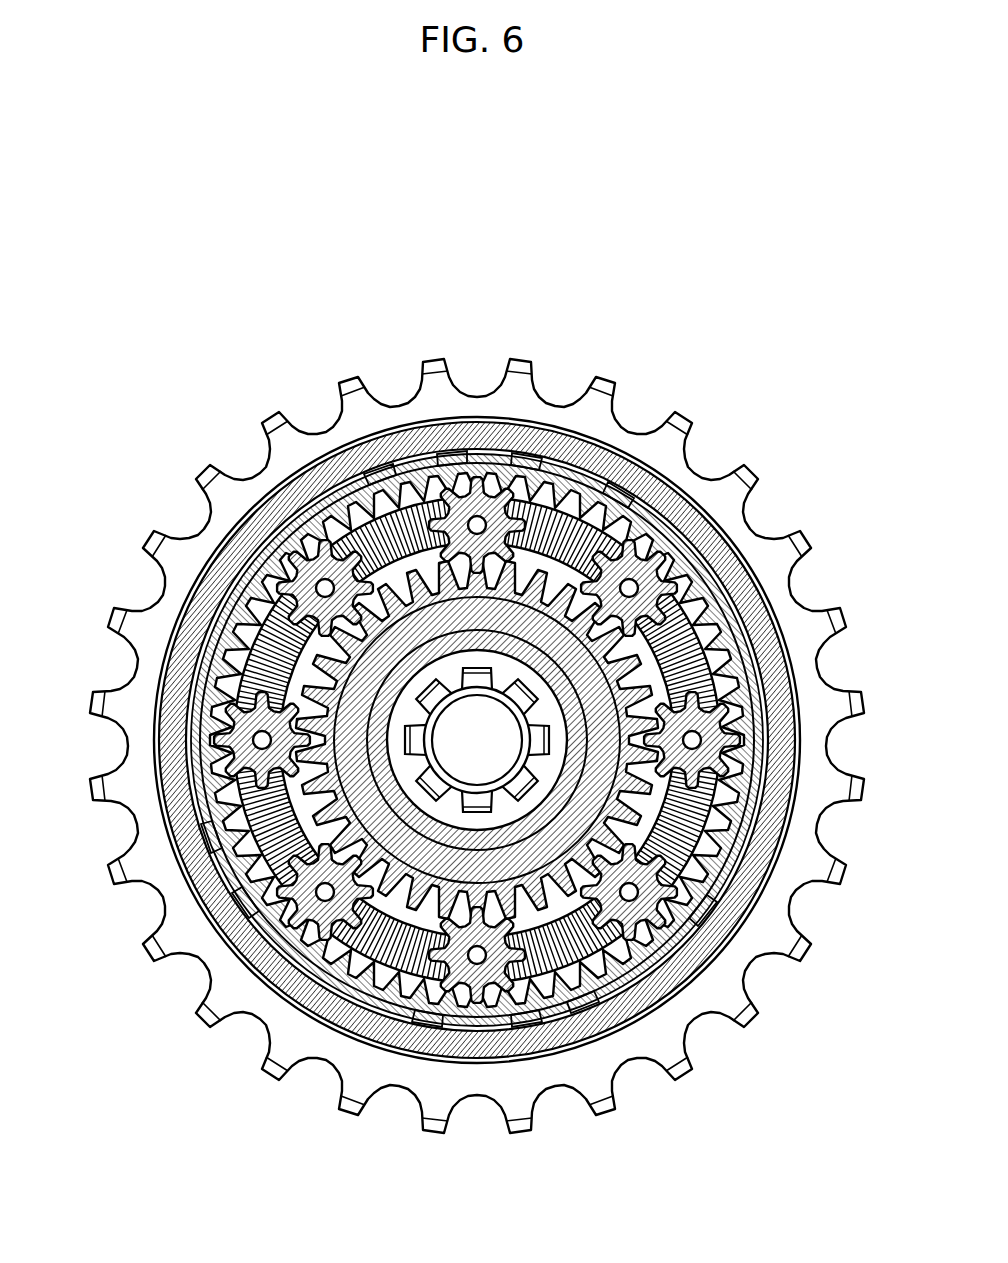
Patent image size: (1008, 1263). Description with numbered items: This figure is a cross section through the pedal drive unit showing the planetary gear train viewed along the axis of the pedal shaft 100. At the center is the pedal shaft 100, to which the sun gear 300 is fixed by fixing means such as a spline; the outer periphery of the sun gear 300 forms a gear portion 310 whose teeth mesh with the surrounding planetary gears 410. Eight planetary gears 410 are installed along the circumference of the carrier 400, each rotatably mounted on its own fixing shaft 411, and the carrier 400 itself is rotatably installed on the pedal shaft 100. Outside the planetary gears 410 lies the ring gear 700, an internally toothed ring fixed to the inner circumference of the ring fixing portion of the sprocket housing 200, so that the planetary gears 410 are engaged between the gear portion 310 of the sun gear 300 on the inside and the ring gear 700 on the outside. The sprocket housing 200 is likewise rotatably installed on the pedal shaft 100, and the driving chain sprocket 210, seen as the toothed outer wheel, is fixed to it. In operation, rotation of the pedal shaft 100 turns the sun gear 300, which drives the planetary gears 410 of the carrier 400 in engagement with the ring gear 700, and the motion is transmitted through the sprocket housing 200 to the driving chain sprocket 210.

The pedal shaft 100 is at (456, 757).
The sprocket housing 200 is at (718, 540).
The driving chain sprocket 210 is at (598, 382).
The sun gear 300 is at (603, 1035).
The gear portion 310 is at (647, 803).
The carrier 400 is at (673, 643).
The planetary gears 410 is at (422, 488).
The fixing shafts 411 is at (252, 742).
The ring gear 700 is at (190, 590).